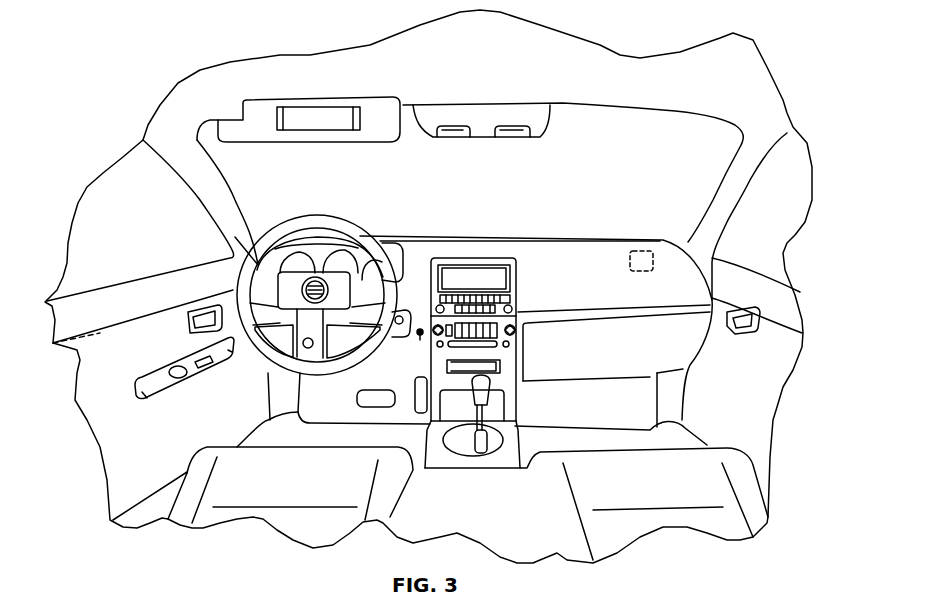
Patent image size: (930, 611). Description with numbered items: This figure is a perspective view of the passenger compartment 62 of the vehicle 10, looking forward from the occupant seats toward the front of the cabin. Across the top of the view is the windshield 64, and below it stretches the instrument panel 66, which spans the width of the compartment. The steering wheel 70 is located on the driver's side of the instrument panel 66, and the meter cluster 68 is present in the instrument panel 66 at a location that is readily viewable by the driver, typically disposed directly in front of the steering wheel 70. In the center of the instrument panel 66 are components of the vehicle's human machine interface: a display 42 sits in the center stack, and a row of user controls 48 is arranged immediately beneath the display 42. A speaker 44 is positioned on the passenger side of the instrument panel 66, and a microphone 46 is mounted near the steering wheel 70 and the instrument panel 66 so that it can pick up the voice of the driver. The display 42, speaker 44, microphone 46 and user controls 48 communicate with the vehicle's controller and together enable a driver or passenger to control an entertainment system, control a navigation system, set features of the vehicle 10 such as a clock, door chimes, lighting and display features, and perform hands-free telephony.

The vehicle 10 is at (143, 70).
The passenger compartment 62 is at (748, 80).
The windshield 64 is at (663, 127).
The instrument panel 66 is at (530, 257).
The meter cluster 68 is at (398, 247).
The steering wheel 70 is at (320, 217).
The speaker 44 is at (643, 253).
The display 42 is at (503, 277).
The user control 48 is at (530, 306).
The microphone 46 is at (420, 340).